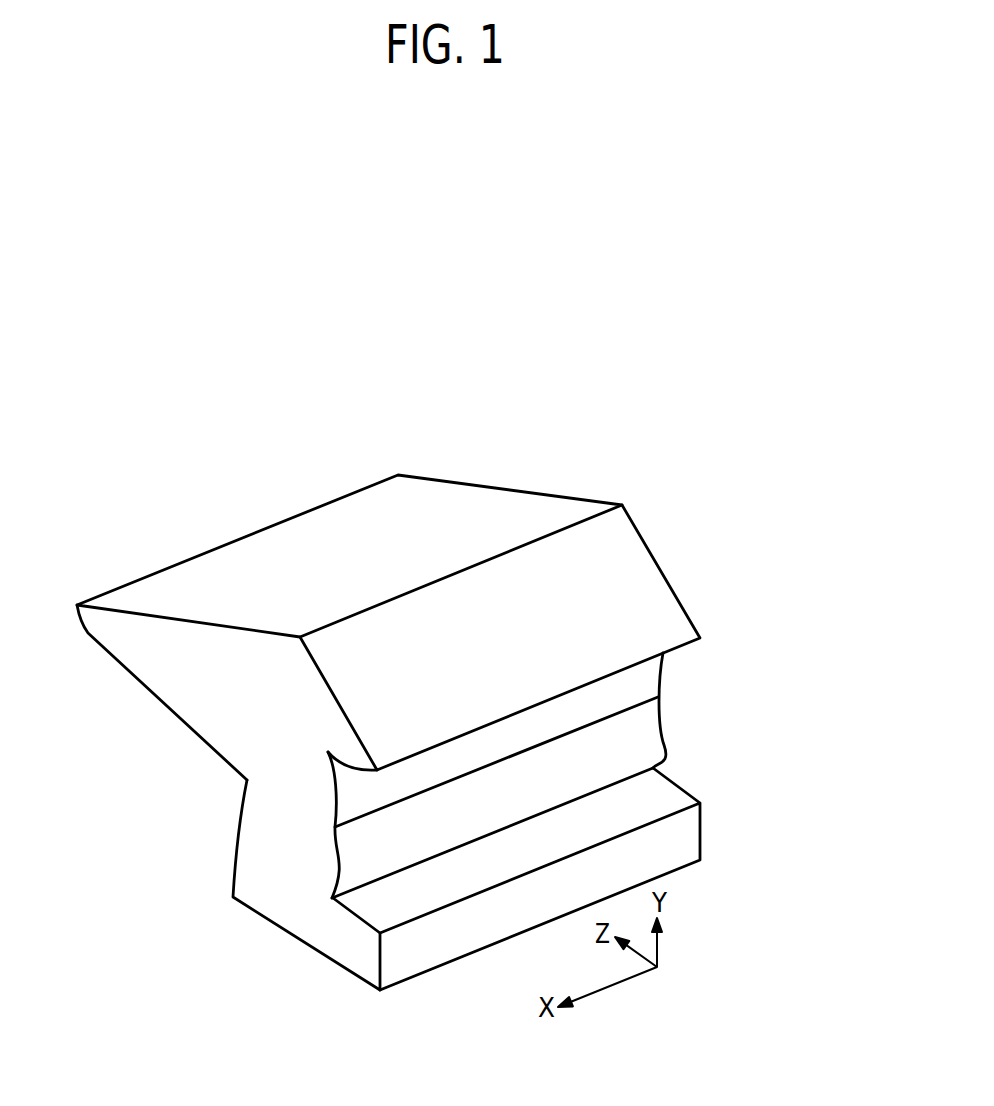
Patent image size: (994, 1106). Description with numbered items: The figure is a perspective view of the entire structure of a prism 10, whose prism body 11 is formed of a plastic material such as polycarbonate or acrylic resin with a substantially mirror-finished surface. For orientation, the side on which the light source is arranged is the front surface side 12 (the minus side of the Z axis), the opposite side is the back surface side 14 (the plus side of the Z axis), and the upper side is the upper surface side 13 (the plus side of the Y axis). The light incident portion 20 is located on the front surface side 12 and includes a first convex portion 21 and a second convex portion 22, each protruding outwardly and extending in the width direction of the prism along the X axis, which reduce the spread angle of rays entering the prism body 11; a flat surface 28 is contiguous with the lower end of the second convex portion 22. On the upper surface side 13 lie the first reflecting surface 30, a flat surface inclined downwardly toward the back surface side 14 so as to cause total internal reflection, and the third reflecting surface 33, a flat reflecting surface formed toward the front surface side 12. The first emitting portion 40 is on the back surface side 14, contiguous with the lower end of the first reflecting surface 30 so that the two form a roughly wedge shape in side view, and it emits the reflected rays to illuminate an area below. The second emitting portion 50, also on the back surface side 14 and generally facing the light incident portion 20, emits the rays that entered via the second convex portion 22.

The prism 10 is at (478, 313).
The prism body 11 is at (395, 473).
The front surface side 12 is at (852, 634).
The upper surface side 13 is at (545, 440).
The back surface side 14 is at (108, 778).
The light incident portion 20 is at (785, 724).
The first convex portion 21 is at (663, 675).
The second convex portion 22 is at (663, 727).
The flat surface 28 is at (657, 797).
The first reflecting surface 30 is at (347, 557).
The third reflecting surface 33 is at (610, 587).
The first emitting portion 40 is at (143, 688).
The second emitting portion 50 is at (237, 826).